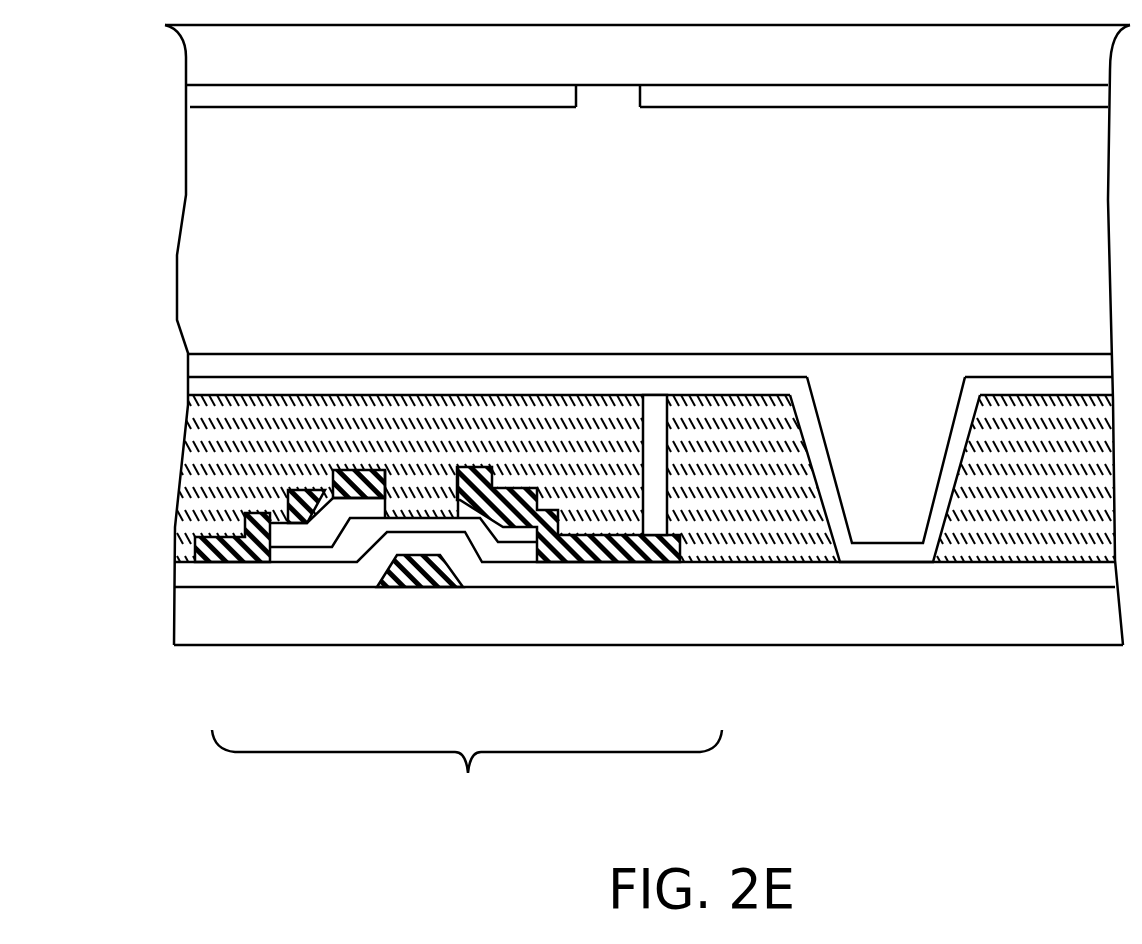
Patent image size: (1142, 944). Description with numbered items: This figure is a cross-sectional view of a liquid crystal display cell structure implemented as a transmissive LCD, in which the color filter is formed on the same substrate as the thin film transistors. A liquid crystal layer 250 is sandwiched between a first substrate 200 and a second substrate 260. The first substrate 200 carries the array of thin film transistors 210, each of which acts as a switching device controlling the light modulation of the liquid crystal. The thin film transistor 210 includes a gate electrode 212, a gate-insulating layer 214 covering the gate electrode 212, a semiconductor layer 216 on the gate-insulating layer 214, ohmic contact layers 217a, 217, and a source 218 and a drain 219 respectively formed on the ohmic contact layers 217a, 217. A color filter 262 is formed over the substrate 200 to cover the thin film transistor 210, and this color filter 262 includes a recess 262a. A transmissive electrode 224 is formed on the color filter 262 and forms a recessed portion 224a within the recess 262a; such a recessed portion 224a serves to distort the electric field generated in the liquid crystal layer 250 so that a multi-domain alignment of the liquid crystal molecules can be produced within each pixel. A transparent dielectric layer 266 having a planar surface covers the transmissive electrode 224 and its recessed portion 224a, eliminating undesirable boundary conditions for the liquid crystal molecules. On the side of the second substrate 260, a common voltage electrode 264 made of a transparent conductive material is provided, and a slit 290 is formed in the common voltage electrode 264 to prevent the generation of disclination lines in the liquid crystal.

The first substrate 200 is at (208, 628).
The thin film transistor 210 is at (467, 790).
The gate electrode 212 is at (438, 590).
The gate-insulating layer 214 is at (200, 577).
The semiconductor layer 216 is at (358, 548).
The ohmic contact layer 217 is at (518, 537).
The ohmic contact layer 217a is at (309, 538).
The source 218 is at (218, 562).
The drain 219 is at (615, 563).
The transmissive electrode 224 is at (200, 383).
The recessed portion 224a is at (890, 557).
The liquid crystal layer 250 is at (195, 211).
The second substrate 260 is at (200, 53).
The color filter 262 is at (200, 468).
The recess 262a is at (885, 425).
The common voltage electrode 264 is at (203, 96).
The transparent dielectric layer 266 is at (200, 363).
The slit 290 is at (617, 128).